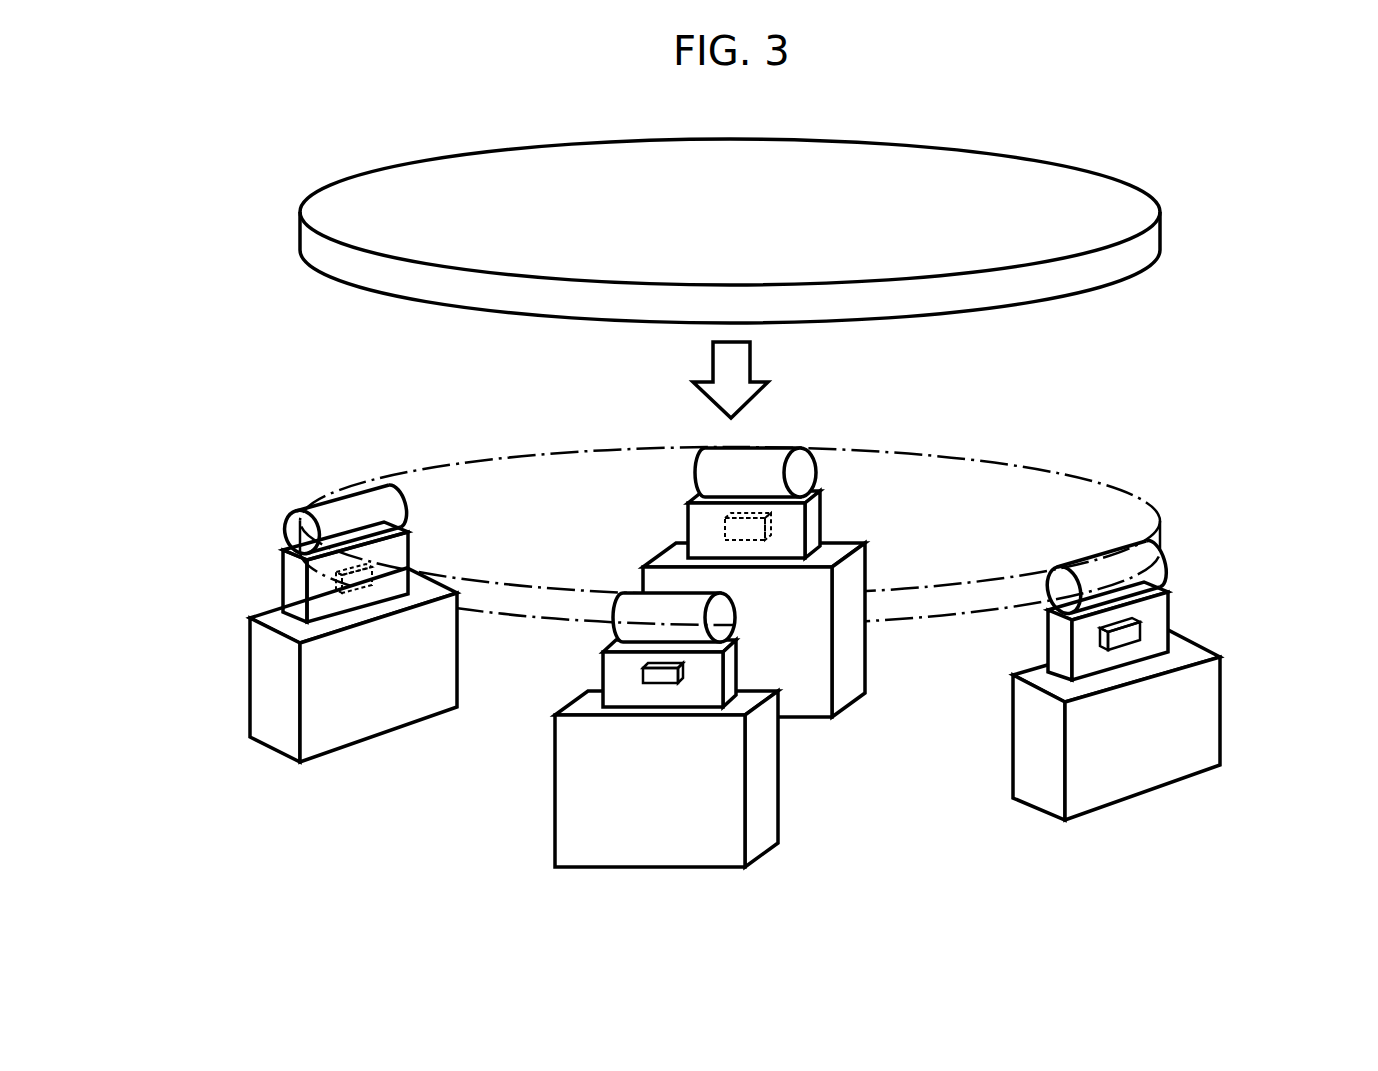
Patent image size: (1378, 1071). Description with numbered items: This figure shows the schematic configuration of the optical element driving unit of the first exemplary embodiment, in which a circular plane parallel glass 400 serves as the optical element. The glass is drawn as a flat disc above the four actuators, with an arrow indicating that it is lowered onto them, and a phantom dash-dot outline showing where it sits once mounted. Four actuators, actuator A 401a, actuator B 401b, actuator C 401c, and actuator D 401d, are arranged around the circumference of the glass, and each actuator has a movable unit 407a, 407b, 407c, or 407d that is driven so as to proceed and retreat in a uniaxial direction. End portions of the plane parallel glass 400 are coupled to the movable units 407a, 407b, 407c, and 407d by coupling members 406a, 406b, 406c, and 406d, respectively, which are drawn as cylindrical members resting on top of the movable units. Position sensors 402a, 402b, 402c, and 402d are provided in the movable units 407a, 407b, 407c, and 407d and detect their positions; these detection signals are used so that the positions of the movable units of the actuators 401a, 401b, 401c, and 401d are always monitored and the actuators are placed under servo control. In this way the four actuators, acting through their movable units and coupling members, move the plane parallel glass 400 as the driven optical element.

The plane parallel glass 400 is at (730, 303).
The actuator A 401a is at (285, 658).
The actuator B 401b is at (592, 798).
The actuator C 401c is at (1195, 727).
The actuator D 401d is at (787, 670).
The position sensor 402a is at (347, 582).
The position sensor 402b is at (660, 675).
The position sensor 402c is at (1138, 632).
The position sensor 402d is at (763, 530).
The coupling member 406a is at (303, 510).
The coupling member 406b is at (647, 605).
The coupling member 406c is at (1128, 568).
The coupling member 406d is at (762, 468).
The movable unit 407a is at (293, 578).
The movable unit 407b is at (617, 655).
The movable unit 407c is at (1158, 638).
The movable unit 407d is at (800, 538).